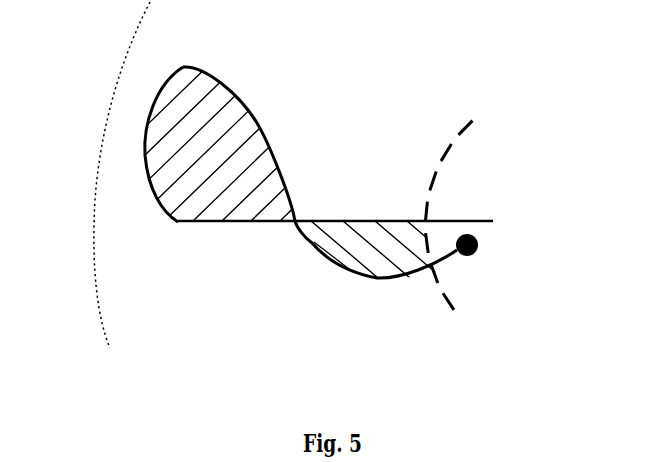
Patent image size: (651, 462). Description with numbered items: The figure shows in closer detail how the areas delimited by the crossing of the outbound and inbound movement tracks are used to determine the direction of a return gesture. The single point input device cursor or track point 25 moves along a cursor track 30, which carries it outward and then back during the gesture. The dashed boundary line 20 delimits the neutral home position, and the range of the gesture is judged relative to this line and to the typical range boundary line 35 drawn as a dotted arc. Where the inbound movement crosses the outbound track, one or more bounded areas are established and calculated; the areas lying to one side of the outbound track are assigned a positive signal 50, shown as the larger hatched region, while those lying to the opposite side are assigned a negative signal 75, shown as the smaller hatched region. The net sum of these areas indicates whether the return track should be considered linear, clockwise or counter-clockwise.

The boundary line 20 is at (448, 300).
The single point input device cursor or track point 25 is at (469, 257).
The cursor track 30 is at (275, 138).
The typical range boundary line 35 is at (102, 138).
The positive signal 50 is at (205, 100).
The negative signal 75 is at (365, 247).